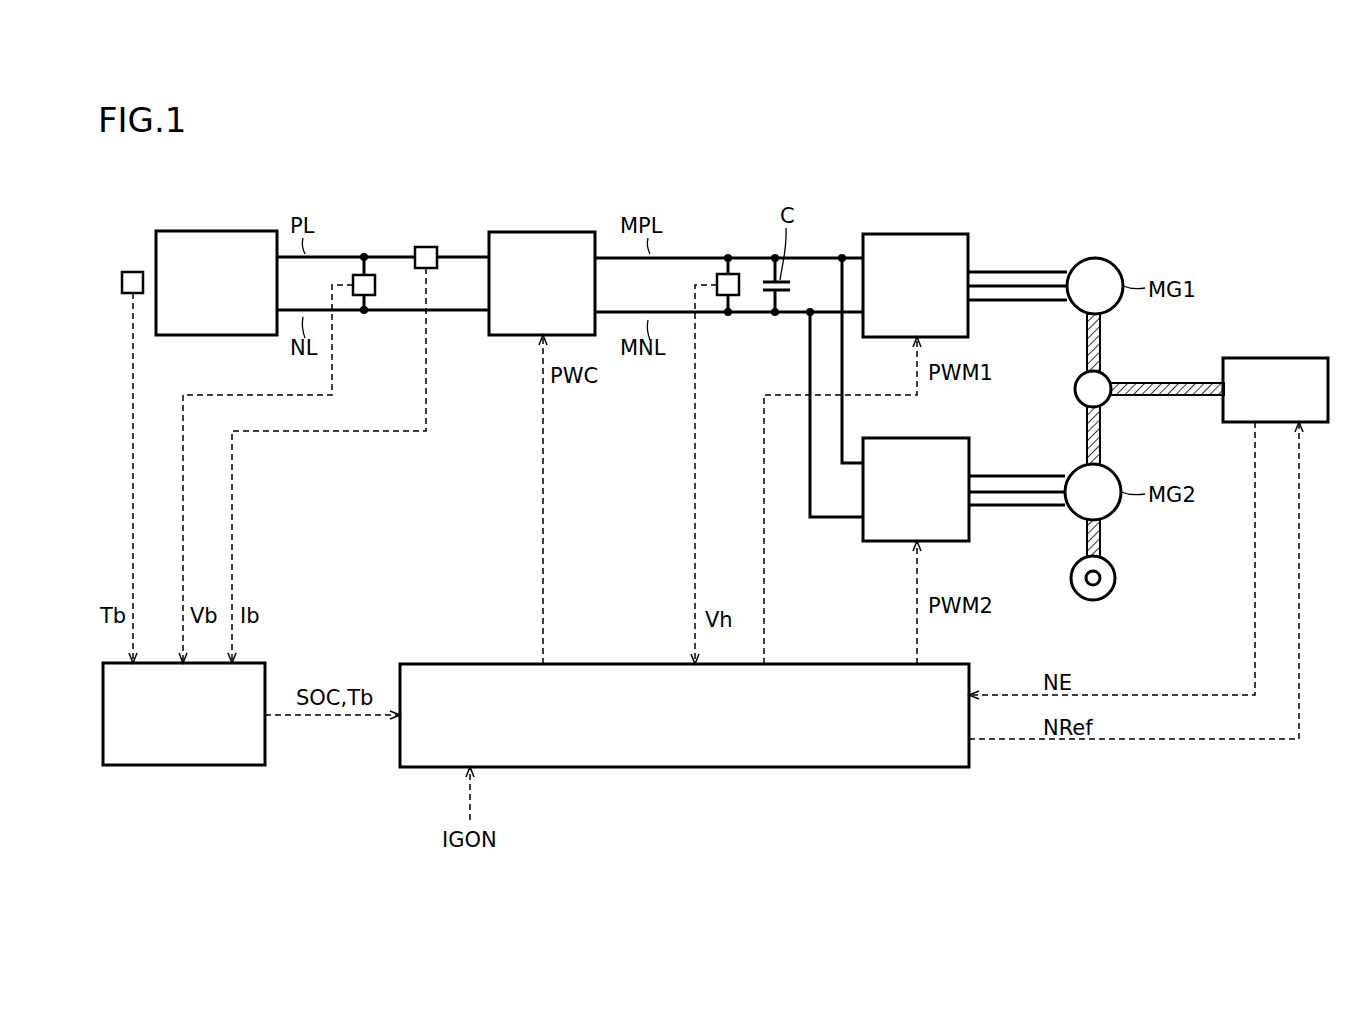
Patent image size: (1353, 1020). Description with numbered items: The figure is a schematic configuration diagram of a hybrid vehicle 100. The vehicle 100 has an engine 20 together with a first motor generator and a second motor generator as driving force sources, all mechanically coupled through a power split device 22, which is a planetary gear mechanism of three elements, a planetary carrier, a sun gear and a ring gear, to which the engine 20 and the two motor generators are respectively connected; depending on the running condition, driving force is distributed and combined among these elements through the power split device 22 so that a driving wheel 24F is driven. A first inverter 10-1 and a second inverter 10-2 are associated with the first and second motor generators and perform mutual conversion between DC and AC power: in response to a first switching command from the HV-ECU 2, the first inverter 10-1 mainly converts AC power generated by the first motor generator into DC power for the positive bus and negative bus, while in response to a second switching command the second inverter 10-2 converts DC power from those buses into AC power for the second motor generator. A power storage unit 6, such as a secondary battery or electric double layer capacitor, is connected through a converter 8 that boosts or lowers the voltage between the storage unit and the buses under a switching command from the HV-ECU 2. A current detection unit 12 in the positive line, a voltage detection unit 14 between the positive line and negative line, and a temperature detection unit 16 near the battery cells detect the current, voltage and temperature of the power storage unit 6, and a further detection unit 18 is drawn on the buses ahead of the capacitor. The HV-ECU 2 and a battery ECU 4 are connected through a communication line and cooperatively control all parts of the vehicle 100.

The vehicle 100 is at (1240, 188).
The HV-ECU 2 is at (931, 767).
The battery ECU 4 is at (230, 765).
The power storage unit 6 is at (240, 231).
The converter 8 is at (562, 232).
The first inverter 10-1 is at (920, 235).
The second inverter 10-2 is at (920, 439).
The current detection unit 12 is at (426, 247).
The voltage detection unit 14 is at (375, 280).
The temperature detection unit 16 is at (133, 272).
The voltage sensor 18 is at (722, 274).
The engine 20 is at (1282, 359).
The power split device 22 is at (1110, 380).
The driving wheel 24F is at (1115, 578).